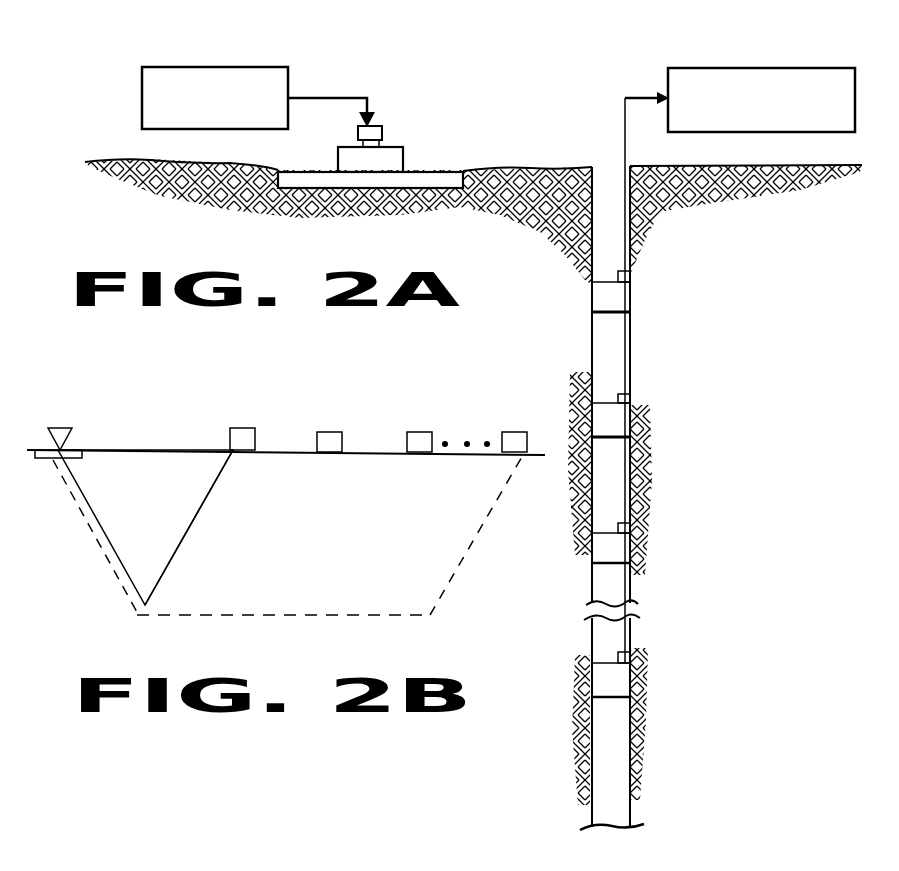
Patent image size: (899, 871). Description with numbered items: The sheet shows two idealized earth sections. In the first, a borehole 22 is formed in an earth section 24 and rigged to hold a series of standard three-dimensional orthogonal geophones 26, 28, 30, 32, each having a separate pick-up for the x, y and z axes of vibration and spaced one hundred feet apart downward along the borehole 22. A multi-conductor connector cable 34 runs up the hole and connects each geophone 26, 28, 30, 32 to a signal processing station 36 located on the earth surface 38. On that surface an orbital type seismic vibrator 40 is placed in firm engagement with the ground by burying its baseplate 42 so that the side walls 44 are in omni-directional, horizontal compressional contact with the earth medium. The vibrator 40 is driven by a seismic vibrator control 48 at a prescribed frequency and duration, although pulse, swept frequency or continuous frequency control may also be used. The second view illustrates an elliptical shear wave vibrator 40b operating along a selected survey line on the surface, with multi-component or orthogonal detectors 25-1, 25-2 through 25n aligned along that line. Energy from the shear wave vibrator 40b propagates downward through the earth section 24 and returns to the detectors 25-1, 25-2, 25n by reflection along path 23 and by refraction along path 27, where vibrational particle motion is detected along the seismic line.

In FIG. 2A, the seismic vibrator control 48 is at (213, 67).
In FIG. 2A, the orbital type seismic vibrator 40 is at (396, 121).
In FIG. 2A, the baseplate 42 is at (417, 172).
In FIG. 2A, the side walls 44 is at (438, 180).
In FIG. 2A, the earth surface 38 is at (503, 167).
In FIG. 2A, the signal processing station 36 is at (740, 68).
In FIG. 2A, the borehole 22 is at (590, 358).
In FIG. 2A, the connector cable 34 is at (625, 358).
In FIG. 2A, the three-dimensional orthogonal geophone 26 is at (610, 302).
In FIG. 2A, the three-dimensional orthogonal geophone 28 is at (610, 425).
In FIG. 2A, the three-dimensional orthogonal geophone 30 is at (620, 548).
In FIG. 2A, the three-dimensional orthogonal geophone 32 is at (613, 687).
In FIG. 2A, the earth section 24 is at (500, 309).
In FIG. 2B, the earth section 24 is at (158, 510).
In FIG. 2B, the elliptical shear wave vibrator 40b is at (74, 416).
In FIG. 2B, the detector 25-1 is at (245, 428).
In FIG. 2B, the detector 25-2 is at (330, 432).
In FIG. 2B, the detector 25n is at (512, 432).
In FIG. 2B, the reflection path 23 is at (188, 533).
In FIG. 2B, the refraction path 27 is at (475, 538).